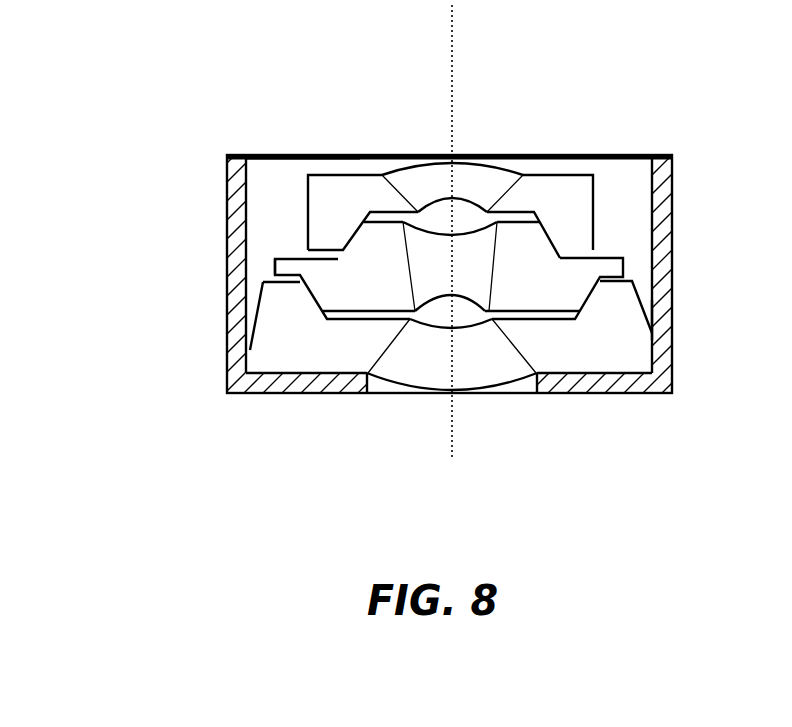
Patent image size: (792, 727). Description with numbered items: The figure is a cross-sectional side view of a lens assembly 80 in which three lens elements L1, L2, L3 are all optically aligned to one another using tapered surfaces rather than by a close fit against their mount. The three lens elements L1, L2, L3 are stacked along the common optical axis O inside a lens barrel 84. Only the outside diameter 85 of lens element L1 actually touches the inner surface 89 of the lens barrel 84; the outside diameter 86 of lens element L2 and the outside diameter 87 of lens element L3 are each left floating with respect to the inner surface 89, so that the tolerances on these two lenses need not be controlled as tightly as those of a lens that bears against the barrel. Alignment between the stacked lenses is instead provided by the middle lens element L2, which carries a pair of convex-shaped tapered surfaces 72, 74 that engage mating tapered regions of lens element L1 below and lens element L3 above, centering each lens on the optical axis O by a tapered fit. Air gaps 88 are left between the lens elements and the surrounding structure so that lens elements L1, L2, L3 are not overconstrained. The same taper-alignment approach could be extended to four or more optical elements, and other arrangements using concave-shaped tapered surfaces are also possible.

The lens assembly 80 is at (195, 73).
The convex-shaped tapered surface 72 is at (549, 238).
The convex-shaped tapered surface 74 is at (590, 292).
The lens barrel 84 is at (661, 394).
The outside diameter of lens element L1 85 is at (664, 354).
The outside diameter of lens element L2 86 is at (270, 270).
The outside diameter of lens element L3 87 is at (305, 213).
The air gaps 88 is at (625, 279).
The inner surface of lens barrel 89 is at (249, 171).
The lens element L1 is at (320, 362).
The lens element L2 is at (343, 282).
The lens element L3 is at (583, 198).
The optical axis O is at (456, 425).